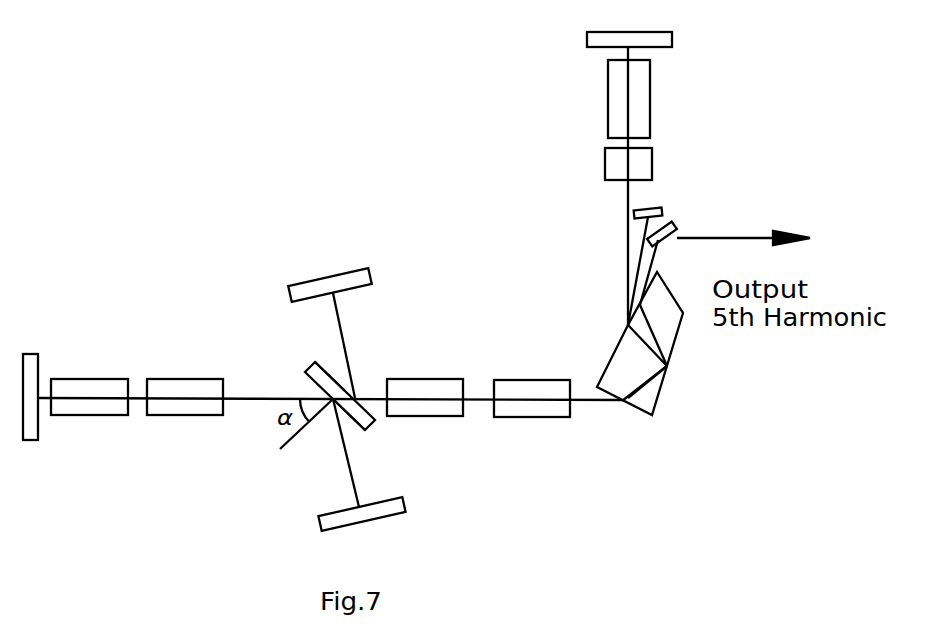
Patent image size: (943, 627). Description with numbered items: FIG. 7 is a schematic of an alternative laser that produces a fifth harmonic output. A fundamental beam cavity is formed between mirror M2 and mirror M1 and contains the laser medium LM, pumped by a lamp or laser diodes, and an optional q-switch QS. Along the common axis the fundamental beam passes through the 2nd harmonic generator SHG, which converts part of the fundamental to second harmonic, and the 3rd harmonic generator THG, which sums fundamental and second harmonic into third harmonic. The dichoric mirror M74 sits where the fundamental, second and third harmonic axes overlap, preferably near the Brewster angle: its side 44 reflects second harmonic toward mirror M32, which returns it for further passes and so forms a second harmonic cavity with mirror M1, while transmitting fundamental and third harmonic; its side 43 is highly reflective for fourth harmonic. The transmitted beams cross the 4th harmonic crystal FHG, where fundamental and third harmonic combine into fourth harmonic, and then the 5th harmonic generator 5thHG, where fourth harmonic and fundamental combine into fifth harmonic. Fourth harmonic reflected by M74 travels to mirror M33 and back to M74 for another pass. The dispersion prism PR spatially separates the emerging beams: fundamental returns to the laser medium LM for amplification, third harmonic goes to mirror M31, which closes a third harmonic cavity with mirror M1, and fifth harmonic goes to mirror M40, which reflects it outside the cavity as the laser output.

The mirror M1 is at (36, 380).
The mirror M2 is at (607, 40).
The laser medium LM is at (606, 99).
The q-switch QS is at (606, 164).
The 2nd harmonic generator SHG is at (89, 381).
The 3rd harmonic generator THG is at (185, 381).
The 4th harmonic non-linear crystal FHG is at (425, 383).
The 5th harmonic generator 5thHG is at (532, 384).
The dichoric mirror M74 is at (313, 389).
The side 43 is at (330, 370).
The side 44 is at (351, 423).
The mirror M33 is at (359, 328).
The mirror M32 is at (390, 465).
The mirror M31 is at (664, 252).
The mirror M40 is at (679, 263).
The dispersion prism PR is at (652, 343).